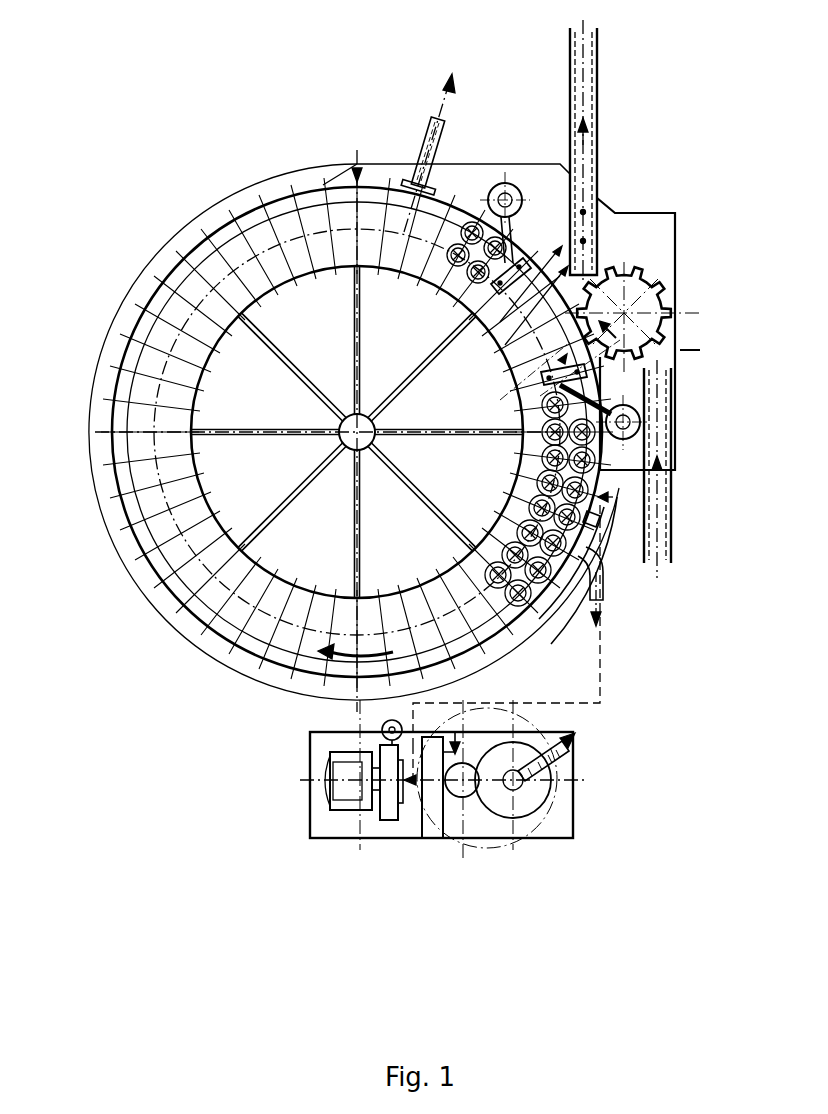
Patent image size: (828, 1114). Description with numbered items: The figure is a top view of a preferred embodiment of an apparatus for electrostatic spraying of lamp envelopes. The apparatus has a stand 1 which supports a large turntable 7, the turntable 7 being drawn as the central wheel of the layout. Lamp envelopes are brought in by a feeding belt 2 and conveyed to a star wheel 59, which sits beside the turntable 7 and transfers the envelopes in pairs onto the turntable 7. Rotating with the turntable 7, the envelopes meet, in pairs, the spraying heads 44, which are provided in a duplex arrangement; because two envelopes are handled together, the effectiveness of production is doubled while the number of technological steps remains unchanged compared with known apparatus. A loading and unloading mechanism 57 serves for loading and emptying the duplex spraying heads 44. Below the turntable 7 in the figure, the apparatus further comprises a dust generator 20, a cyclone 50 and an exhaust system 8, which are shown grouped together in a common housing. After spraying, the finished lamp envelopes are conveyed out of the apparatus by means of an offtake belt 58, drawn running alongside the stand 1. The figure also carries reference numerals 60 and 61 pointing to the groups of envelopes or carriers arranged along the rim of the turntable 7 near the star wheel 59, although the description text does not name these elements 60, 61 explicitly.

The stand 1 is at (615, 232).
The feeding belt 2 is at (667, 530).
The turntable 7 is at (372, 196).
The exhaust system 8 is at (348, 792).
The dust generator 20 is at (528, 802).
The spraying heads 44 is at (512, 626).
The cyclone 50 is at (455, 792).
The loading and unloading mechanism 57 is at (545, 379).
The offtake belt 58 is at (585, 97).
The star wheel 59 is at (635, 282).
The rolls 60 is at (544, 461).
The rolls 61 is at (522, 537).